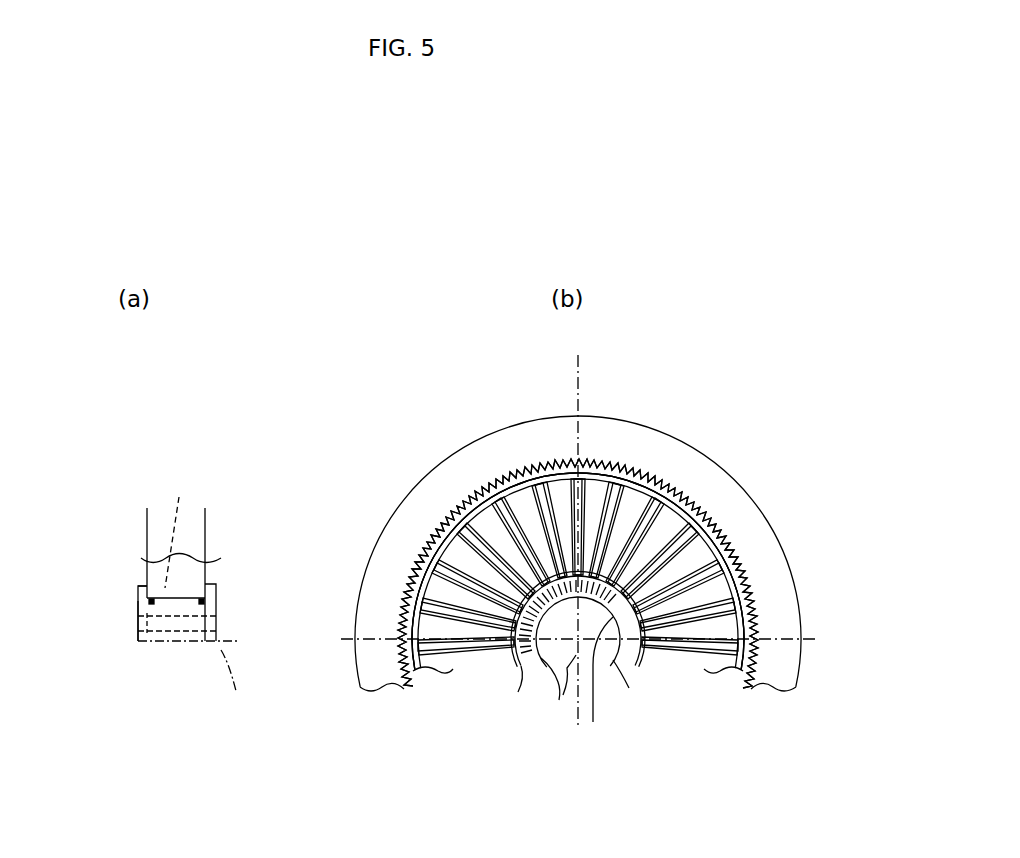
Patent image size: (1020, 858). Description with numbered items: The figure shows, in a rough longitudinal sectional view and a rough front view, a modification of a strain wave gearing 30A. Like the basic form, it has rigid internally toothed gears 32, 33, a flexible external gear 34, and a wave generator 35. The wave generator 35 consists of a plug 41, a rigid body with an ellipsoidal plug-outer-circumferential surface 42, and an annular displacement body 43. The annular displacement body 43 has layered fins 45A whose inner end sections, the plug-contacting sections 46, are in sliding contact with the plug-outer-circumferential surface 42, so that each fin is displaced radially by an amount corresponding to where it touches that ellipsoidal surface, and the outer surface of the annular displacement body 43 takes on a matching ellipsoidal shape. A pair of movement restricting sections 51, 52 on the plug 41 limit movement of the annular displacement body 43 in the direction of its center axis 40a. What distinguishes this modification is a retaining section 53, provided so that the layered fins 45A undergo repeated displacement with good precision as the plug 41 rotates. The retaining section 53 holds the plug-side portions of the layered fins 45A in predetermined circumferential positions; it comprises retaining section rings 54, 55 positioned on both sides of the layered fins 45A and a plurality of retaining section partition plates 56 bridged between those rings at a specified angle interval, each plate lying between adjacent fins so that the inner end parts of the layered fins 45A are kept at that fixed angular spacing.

The strain wave gearing 30A is at (740, 378).
The rigid internally toothed gear 32 is at (744, 549).
The rigid internally toothed gear 33 is at (578, 571).
The flexible external gear 34 is at (124, 521).
The wave generator 35 is at (712, 607).
The plug 41 is at (139, 636).
The plug-outer-circumferential surface 42 is at (187, 603).
The annular displacement body 43 is at (141, 549).
The layered fins 45A is at (143, 557).
The plug-contacting sections 46 is at (192, 600).
The movement restricting section 51 is at (139, 598).
The movement restricting section 52 is at (218, 620).
The retaining section 53 is at (129, 579).
The retaining section ring 54 is at (139, 585).
The retaining section ring 55 is at (218, 583).
The retaining section partition plates 56 is at (179, 530).
The center axis 40a is at (244, 689).